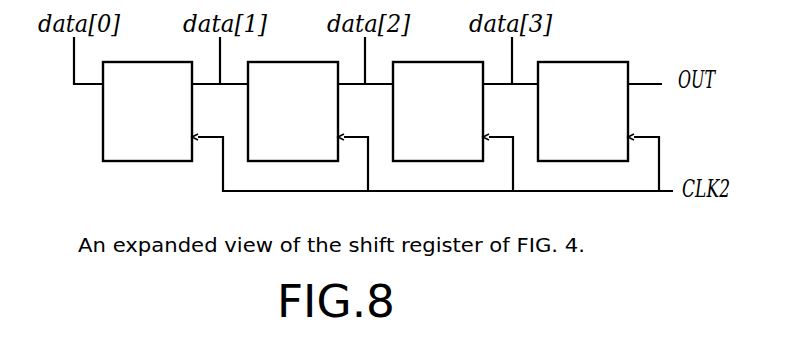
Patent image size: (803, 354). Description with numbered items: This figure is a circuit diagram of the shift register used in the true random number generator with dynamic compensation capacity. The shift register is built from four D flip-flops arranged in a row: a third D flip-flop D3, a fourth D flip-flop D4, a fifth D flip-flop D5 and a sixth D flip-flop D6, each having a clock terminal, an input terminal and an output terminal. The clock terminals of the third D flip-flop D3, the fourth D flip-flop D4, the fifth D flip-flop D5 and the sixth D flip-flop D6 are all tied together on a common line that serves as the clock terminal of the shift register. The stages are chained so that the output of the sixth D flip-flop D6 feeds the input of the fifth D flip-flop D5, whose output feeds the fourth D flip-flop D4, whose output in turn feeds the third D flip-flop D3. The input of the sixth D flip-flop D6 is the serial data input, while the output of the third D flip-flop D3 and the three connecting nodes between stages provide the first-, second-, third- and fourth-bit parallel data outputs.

The third D flip-flop D3 is at (147, 127).
The fourth D flip-flop D4 is at (293, 127).
The fifth D flip-flop D5 is at (438, 127).
The sixth D flip-flop D6 is at (583, 127).